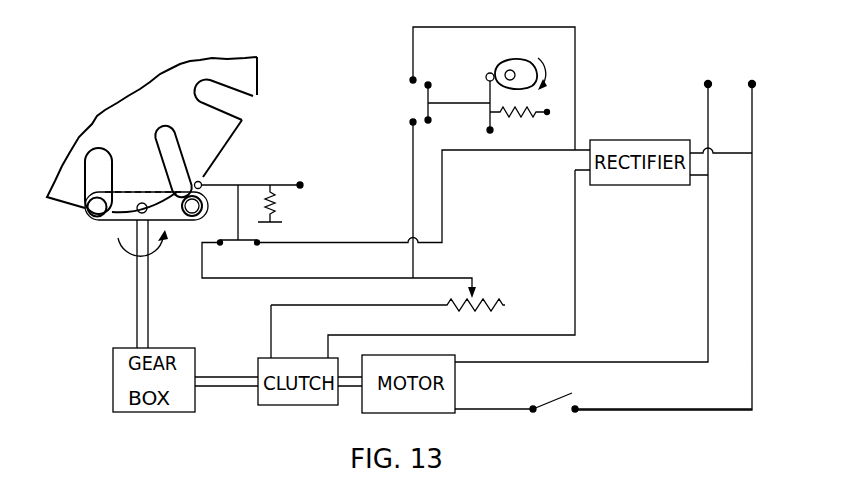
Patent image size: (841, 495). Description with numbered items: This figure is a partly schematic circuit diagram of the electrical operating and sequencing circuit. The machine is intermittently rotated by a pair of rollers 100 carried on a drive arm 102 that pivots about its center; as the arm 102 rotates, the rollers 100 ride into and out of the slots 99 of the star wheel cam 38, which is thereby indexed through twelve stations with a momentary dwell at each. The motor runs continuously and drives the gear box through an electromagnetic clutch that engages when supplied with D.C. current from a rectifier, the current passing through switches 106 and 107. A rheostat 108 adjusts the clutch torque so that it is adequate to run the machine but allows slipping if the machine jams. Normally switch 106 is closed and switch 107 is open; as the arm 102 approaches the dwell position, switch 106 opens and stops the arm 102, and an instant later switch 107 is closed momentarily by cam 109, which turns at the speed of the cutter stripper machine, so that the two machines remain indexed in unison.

The star wheel cam 38 is at (253, 74).
The slots 99 is at (240, 105).
The rollers 100 is at (93, 212).
The drive arm 102 is at (112, 220).
The switch 106 is at (245, 243).
The switch 107 is at (432, 93).
The rheostat 108 is at (478, 298).
The cam 109 is at (527, 61).